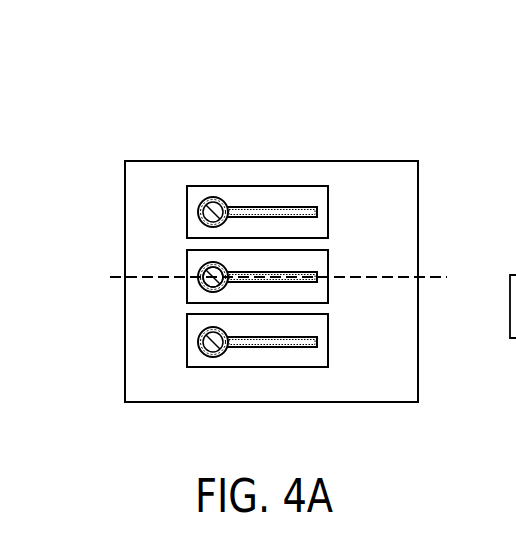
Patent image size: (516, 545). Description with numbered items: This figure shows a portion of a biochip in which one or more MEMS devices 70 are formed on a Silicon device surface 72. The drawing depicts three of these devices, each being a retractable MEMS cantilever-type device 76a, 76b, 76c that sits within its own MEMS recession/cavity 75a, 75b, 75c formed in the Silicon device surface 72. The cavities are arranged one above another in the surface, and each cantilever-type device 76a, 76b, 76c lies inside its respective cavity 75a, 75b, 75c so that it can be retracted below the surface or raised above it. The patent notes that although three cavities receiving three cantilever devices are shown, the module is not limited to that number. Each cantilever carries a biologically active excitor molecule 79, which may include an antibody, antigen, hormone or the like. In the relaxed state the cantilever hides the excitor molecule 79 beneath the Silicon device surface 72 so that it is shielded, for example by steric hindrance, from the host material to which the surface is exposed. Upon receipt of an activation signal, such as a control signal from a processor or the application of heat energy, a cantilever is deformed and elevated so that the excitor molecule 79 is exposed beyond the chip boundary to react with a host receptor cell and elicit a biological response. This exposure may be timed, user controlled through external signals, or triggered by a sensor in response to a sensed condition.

The MEMS device 70 is at (246, 117).
The Silicon device surface 72 is at (209, 160).
The MEMS recession/cavity 75a is at (322, 369).
The MEMS recession/cavity 75b is at (187, 277).
The MEMS recession/cavity 75c is at (187, 212).
The retractable MEMS cantilever-type device 76a is at (328, 340).
The retractable MEMS cantilever-type device 76b is at (319, 277).
The retractable MEMS cantilever-type device 76c is at (299, 205).
The biologically active excitor molecule 79 is at (207, 290).